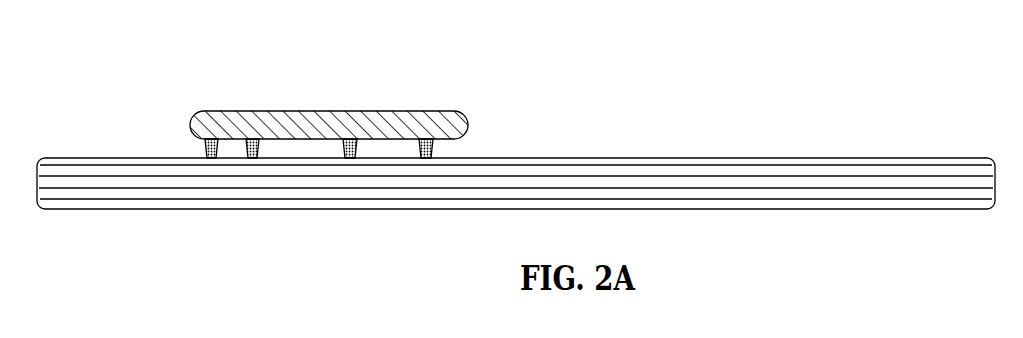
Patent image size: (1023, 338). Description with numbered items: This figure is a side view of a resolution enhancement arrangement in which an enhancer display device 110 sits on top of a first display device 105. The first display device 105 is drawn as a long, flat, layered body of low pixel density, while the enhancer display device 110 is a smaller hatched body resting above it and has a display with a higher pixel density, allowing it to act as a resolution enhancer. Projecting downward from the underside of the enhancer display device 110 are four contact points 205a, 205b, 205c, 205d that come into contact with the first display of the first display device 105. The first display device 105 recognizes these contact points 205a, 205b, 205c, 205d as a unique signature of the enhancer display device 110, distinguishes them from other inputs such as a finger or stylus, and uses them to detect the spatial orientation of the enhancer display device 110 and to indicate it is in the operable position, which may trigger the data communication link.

The first display device 105 is at (328, 202).
The enhancer display device 110 is at (216, 114).
The contact point 205a is at (259, 141).
The contact point 205b is at (357, 140).
The contact point 205c is at (434, 144).
The contact point 205d is at (205, 142).